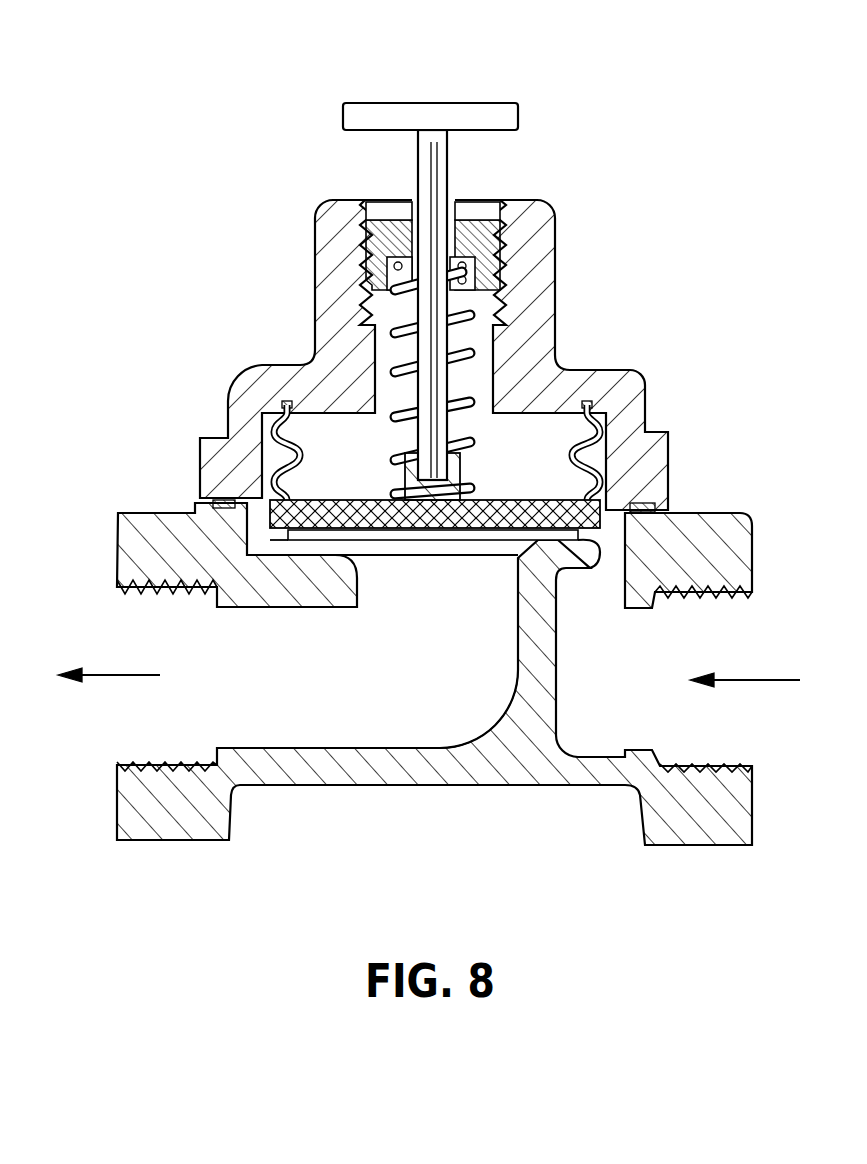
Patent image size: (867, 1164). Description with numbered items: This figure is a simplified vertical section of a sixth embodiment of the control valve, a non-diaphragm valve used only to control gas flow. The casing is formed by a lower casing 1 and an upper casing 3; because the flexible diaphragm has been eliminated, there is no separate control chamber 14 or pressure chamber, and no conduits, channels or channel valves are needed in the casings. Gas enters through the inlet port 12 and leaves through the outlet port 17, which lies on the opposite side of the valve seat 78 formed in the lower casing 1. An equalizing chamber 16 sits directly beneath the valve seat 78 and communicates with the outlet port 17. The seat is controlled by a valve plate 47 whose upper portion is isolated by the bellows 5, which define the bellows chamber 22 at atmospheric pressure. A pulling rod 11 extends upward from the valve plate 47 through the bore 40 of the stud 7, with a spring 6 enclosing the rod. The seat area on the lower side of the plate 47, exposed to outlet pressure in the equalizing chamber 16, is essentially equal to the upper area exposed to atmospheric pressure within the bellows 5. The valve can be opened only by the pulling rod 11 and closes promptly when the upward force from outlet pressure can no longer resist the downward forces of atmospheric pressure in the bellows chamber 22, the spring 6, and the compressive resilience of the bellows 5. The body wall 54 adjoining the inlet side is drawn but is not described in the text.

The lower casing 1 is at (330, 762).
The upper casing 3 is at (335, 241).
The bellows 5 is at (602, 427).
The spring 6 is at (462, 355).
The stud 7 is at (478, 243).
The pulling rod 11 is at (475, 108).
The inlet port 12 is at (726, 641).
The control chamber 14 is at (283, 440).
The equalizing chamber 16 is at (440, 609).
The outlet port 17 is at (170, 633).
The bellows chamber 22 is at (358, 452).
The bore 40 is at (450, 205).
The valve plate 47 is at (607, 508).
The body wall 54 is at (676, 539).
The valve seat 78 is at (614, 548).